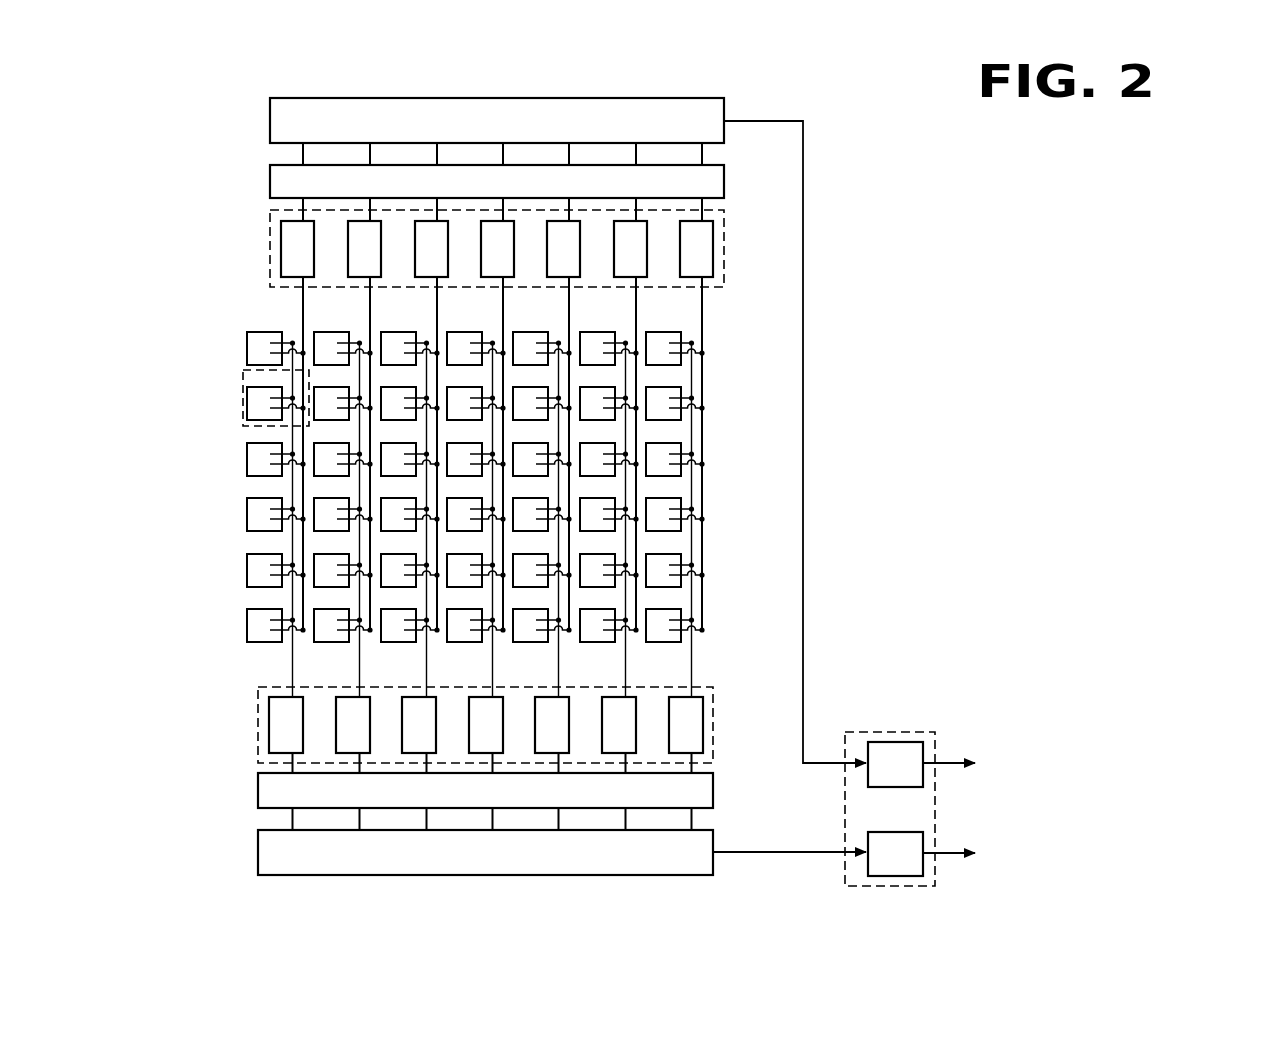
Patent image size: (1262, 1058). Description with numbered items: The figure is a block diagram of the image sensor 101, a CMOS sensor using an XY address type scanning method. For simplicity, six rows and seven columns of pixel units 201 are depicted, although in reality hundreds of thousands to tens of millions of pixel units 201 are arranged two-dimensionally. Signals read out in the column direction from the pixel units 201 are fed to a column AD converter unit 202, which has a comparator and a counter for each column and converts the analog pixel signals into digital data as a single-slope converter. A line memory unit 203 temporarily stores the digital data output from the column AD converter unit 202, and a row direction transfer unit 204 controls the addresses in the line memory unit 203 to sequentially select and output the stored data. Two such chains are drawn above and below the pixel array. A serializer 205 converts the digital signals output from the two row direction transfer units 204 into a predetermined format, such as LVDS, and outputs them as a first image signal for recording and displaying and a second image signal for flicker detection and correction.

The image sensor 101 is at (533, 93).
The pixel unit 201 is at (243, 386).
The column AD converter unit 202 is at (725, 255).
The line memory unit 203 is at (725, 185).
The row direction transfer unit 204 is at (725, 110).
The serializer 205 is at (937, 740).